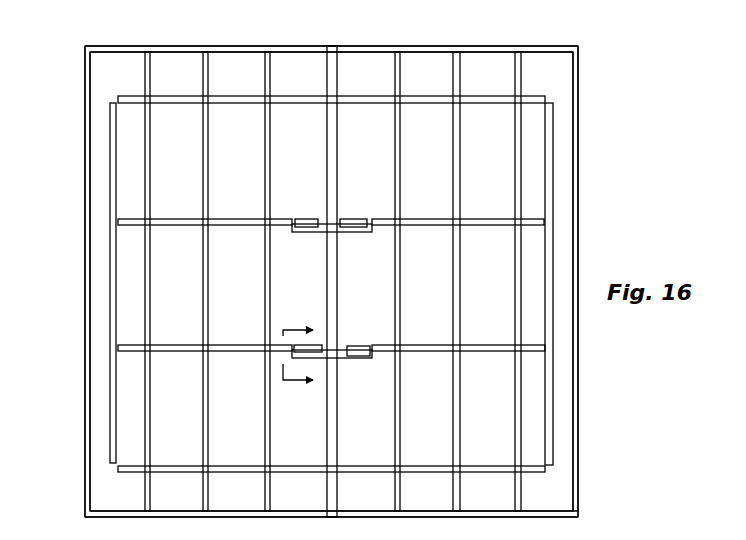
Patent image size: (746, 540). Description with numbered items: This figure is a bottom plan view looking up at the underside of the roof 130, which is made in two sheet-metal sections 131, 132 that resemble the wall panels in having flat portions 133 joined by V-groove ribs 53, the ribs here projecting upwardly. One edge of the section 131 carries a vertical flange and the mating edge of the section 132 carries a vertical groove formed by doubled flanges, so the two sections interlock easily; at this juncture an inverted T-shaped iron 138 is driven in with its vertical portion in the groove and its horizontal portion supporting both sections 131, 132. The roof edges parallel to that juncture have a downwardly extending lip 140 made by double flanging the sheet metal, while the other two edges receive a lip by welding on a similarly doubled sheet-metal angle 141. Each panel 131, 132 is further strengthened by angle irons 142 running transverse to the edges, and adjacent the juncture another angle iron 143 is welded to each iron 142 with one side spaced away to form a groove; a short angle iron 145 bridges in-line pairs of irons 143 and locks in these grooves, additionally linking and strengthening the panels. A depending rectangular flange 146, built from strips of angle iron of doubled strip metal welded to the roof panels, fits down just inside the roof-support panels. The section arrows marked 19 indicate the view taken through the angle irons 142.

The roof 130 is at (589, 51).
The roof section 131 is at (205, 517).
The roof section 132 is at (412, 517).
The flat portion 133 is at (280, 187).
The inverted T-shaped iron 138 is at (337, 140).
The downwardly extending lip 140 is at (86, 180).
The doubled sheet-metal angle 141 is at (353, 46).
The angle iron 142 is at (212, 219).
The angle iron 143 is at (306, 221).
The short angle iron 145 is at (319, 232).
The depending rectangular flange 146 is at (124, 116).
The V-groove rib 53 is at (150, 132).
The section line of FIG. 19 is at (298, 355).